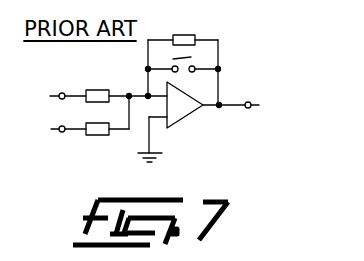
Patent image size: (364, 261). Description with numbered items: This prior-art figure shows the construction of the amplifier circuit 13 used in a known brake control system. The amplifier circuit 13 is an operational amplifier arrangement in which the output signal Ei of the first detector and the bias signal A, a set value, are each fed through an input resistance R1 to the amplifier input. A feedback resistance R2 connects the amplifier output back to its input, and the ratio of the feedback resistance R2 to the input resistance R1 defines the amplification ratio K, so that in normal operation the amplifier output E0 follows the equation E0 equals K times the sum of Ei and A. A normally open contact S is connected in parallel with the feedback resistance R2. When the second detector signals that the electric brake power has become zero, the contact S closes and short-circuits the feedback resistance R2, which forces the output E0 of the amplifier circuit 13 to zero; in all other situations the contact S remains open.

The amplifier circuit 13 is at (190, 118).
The input resistance R1 is at (97, 86).
The feedback resistance R2 is at (189, 32).
The normally open contact S is at (201, 50).
The output signal of the first detector Ei is at (48, 95).
The bias signal A is at (83, 118).
The amplifier output E0 is at (251, 105).